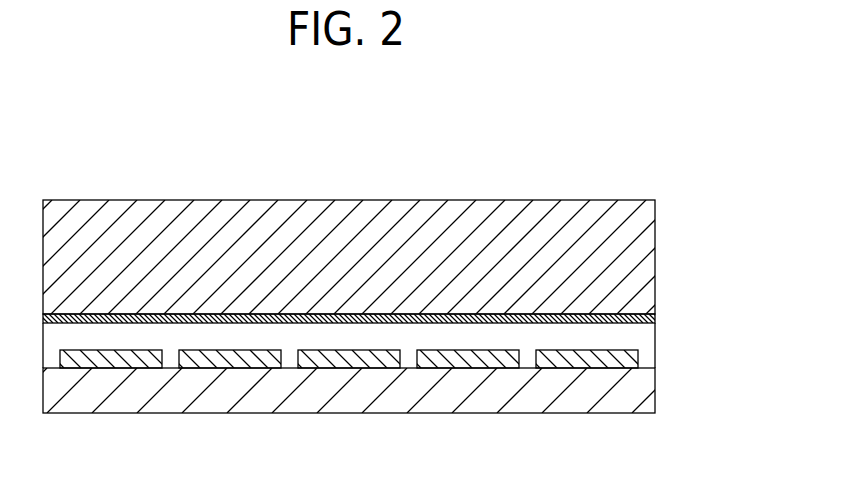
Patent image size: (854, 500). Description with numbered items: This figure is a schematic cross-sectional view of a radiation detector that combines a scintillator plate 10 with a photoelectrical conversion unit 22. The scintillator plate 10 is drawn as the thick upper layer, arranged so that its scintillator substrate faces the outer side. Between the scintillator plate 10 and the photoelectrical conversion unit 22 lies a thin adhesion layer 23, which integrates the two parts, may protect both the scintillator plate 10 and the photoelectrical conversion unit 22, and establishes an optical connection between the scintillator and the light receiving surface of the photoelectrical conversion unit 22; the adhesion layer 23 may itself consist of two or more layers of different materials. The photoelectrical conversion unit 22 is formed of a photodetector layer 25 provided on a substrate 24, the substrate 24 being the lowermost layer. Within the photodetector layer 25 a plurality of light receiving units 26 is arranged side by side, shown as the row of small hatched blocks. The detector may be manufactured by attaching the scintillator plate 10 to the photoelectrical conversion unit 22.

The scintillator plate 10 is at (510, 201).
The photoelectrical conversion unit 22 is at (381, 379).
The adhesion layer 23 is at (657, 322).
The substrate 24 is at (657, 399).
The photodetector layer 25 is at (376, 391).
The light receiving unit 26 is at (572, 368).